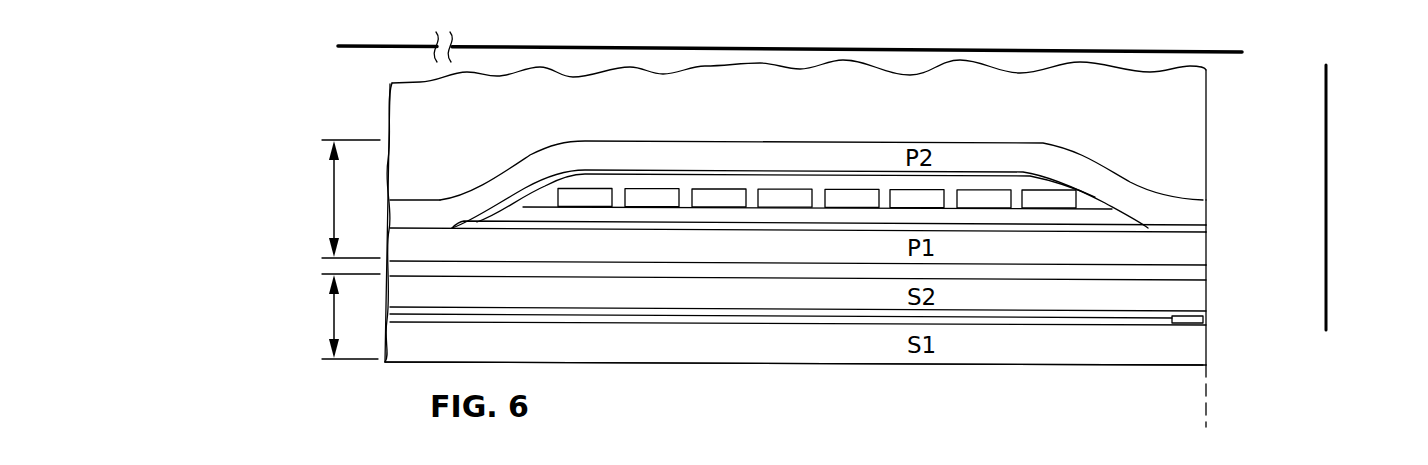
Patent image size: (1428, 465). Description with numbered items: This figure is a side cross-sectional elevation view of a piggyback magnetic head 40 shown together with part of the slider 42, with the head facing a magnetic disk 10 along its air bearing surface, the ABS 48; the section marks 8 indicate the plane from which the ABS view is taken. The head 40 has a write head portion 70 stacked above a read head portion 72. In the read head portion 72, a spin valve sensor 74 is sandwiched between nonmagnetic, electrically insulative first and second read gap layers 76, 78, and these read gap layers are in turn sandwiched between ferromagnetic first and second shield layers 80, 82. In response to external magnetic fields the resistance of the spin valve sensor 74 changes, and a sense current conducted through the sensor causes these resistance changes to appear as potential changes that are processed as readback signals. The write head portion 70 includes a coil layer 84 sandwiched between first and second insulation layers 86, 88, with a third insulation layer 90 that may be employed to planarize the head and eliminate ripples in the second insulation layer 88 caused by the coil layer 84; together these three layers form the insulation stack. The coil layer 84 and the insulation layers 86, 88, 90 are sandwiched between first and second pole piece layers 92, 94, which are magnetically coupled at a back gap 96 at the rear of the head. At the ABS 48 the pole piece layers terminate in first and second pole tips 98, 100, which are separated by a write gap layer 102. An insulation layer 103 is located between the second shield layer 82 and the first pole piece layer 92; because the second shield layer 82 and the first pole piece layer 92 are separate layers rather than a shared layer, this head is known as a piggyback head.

The section line for FIG. 8 is at (1348, 73).
The magnetic disk 10 is at (347, 3).
The piggyback magnetic head 40 is at (368, 89).
The slider 42 is at (1190, 100).
The air bearing surface (ABS) 48 is at (1204, 420).
The write head portion 70 is at (333, 203).
The read head portion 72 is at (333, 322).
The spin valve sensor 74 is at (1204, 320).
The first read gap layer 76 is at (863, 325).
The second read gap layer 78 is at (830, 308).
The first shield layer 80 is at (968, 348).
The second shield layer 82 is at (1073, 298).
The coil layer 84 is at (848, 193).
The first insulation layer 86 is at (755, 215).
The second insulation layer 88 is at (1092, 200).
The third insulation layer 90 is at (627, 173).
The first pole piece layer 92 is at (1122, 253).
The second pole piece layer 94 is at (987, 157).
The back gap 96 is at (432, 230).
The first pole tip 98 is at (1207, 255).
The second pole tip 100 is at (1196, 209).
The write gap layer 102 is at (1207, 229).
The insulation layer 103 is at (1028, 273).